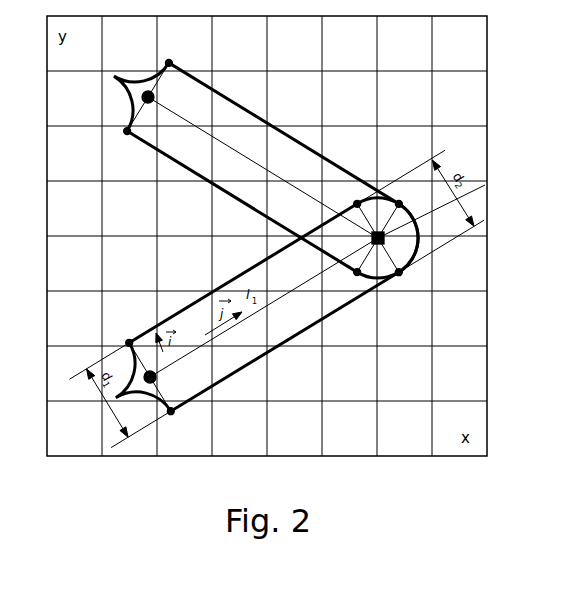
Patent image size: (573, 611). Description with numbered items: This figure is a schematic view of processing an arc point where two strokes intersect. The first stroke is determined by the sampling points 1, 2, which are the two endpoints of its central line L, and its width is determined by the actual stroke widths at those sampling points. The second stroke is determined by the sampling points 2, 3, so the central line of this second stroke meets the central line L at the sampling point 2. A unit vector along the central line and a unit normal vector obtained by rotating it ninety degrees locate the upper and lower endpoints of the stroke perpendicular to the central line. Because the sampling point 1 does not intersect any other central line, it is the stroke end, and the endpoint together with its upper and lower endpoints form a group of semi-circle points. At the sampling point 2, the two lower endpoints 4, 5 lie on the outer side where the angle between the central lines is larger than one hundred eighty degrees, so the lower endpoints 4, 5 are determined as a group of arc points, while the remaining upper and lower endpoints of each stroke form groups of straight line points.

The sampling point 1 is at (150, 377).
The sampling point 2 is at (378, 238).
The sampling point 3 is at (146, 98).
The lower endpoint 4 is at (399, 275).
The lower endpoint 5 is at (398, 203).